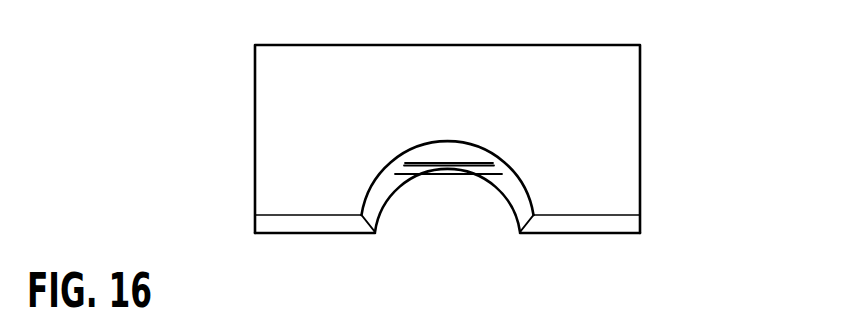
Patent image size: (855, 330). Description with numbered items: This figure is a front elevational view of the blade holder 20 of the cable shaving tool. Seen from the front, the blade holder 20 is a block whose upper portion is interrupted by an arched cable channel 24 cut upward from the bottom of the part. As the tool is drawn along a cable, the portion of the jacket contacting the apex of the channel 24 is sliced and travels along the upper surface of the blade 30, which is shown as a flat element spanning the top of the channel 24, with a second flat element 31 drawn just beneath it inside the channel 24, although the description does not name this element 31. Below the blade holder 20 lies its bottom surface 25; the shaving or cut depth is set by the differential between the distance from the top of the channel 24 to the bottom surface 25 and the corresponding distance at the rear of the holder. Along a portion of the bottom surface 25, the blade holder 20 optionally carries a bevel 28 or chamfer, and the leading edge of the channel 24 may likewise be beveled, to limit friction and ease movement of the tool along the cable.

The blade holder 20 is at (610, 103).
The cable channel 24 is at (490, 158).
The bottom surface 25 is at (310, 236).
The bevel 28 is at (575, 227).
The blade 30 is at (450, 160).
The lower flat surface 31 is at (450, 177).